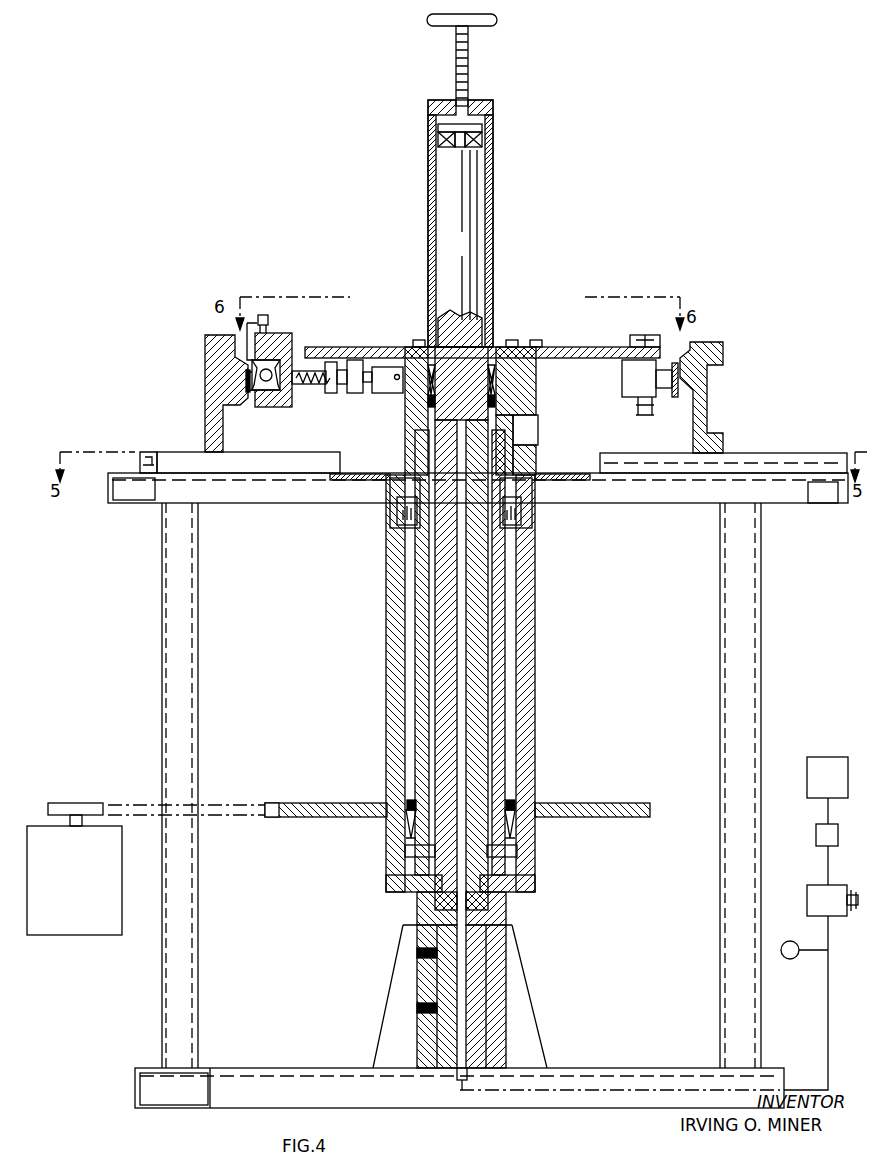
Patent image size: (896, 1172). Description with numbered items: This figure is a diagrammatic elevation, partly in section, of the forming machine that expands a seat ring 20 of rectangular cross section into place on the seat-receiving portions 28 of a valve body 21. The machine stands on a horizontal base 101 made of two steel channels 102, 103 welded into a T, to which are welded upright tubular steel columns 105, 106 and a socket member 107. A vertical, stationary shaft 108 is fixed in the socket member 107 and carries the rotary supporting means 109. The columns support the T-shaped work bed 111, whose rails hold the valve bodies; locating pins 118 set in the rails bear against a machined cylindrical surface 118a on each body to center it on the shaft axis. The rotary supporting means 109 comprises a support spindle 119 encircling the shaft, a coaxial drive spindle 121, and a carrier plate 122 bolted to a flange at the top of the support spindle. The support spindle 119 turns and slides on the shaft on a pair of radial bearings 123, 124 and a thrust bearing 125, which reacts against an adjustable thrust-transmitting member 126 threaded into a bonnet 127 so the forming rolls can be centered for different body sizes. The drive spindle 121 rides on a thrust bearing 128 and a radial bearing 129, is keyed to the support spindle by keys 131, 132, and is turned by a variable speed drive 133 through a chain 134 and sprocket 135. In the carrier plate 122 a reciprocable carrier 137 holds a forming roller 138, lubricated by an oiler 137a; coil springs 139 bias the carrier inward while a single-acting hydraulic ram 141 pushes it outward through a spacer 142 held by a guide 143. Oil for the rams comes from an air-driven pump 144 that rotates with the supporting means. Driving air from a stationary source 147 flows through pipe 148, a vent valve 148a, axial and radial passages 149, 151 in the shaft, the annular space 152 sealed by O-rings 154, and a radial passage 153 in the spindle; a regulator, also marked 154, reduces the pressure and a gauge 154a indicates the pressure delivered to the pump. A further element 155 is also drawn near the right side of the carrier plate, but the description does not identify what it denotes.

The seat ring 20 is at (245, 380).
The valve body 21 is at (707, 398).
The seat-receiving portion 28 is at (678, 370).
The horizontal base 101 is at (614, 1064).
The steel channel 102 is at (290, 1068).
The steel channel 103 is at (138, 1088).
The upright tubular steel column 105 is at (190, 748).
The upright tubular steel column 106 is at (752, 688).
The socket member 107 is at (506, 1010).
The stationary shaft 108 is at (480, 945).
The rotary supporting means 109 is at (403, 422).
The work bed 111 is at (632, 512).
The locating pin 118 is at (694, 450).
The machined cylindrical surface 118a is at (225, 446).
The support spindle 119 is at (405, 448).
The drive spindle 121 is at (535, 628).
The carrier plate 122 is at (556, 347).
The radial bearing 123 is at (515, 830).
The radial bearing 124 is at (496, 392).
The thrust bearing 125 is at (482, 140).
The adjustable thrust-transmitting member 126 is at (475, 80).
The bonnet 127 is at (493, 212).
The thrust bearing 128 is at (506, 920).
The radial bearing 129 is at (535, 888).
The key 131 is at (397, 530).
The key 132 is at (520, 530).
The variable speed drive 133 is at (88, 884).
The chain 134 is at (240, 803).
The sprocket 135 is at (300, 803).
The reciprocable carrier 137 is at (270, 345).
The oiler 137a is at (262, 315).
The forming roller 138 is at (280, 385).
The coil spring 139 is at (312, 372).
The single-acting hydraulic ram 141 is at (394, 393).
The spacer 142 is at (354, 366).
The guide 143 is at (330, 385).
The pump 144 is at (538, 432).
The source of compressed air 147 is at (835, 757).
The pipe 148 is at (808, 885).
The vent valve 148a is at (816, 826).
The axial passage 149 is at (476, 973).
The radial passage 151 is at (520, 410).
The annular space 152 is at (521, 492).
The radial passage 153 is at (520, 458).
The O-ring 154 is at (495, 398).
The gauge 154a is at (790, 941).
The clutch actuator 155 is at (636, 402).